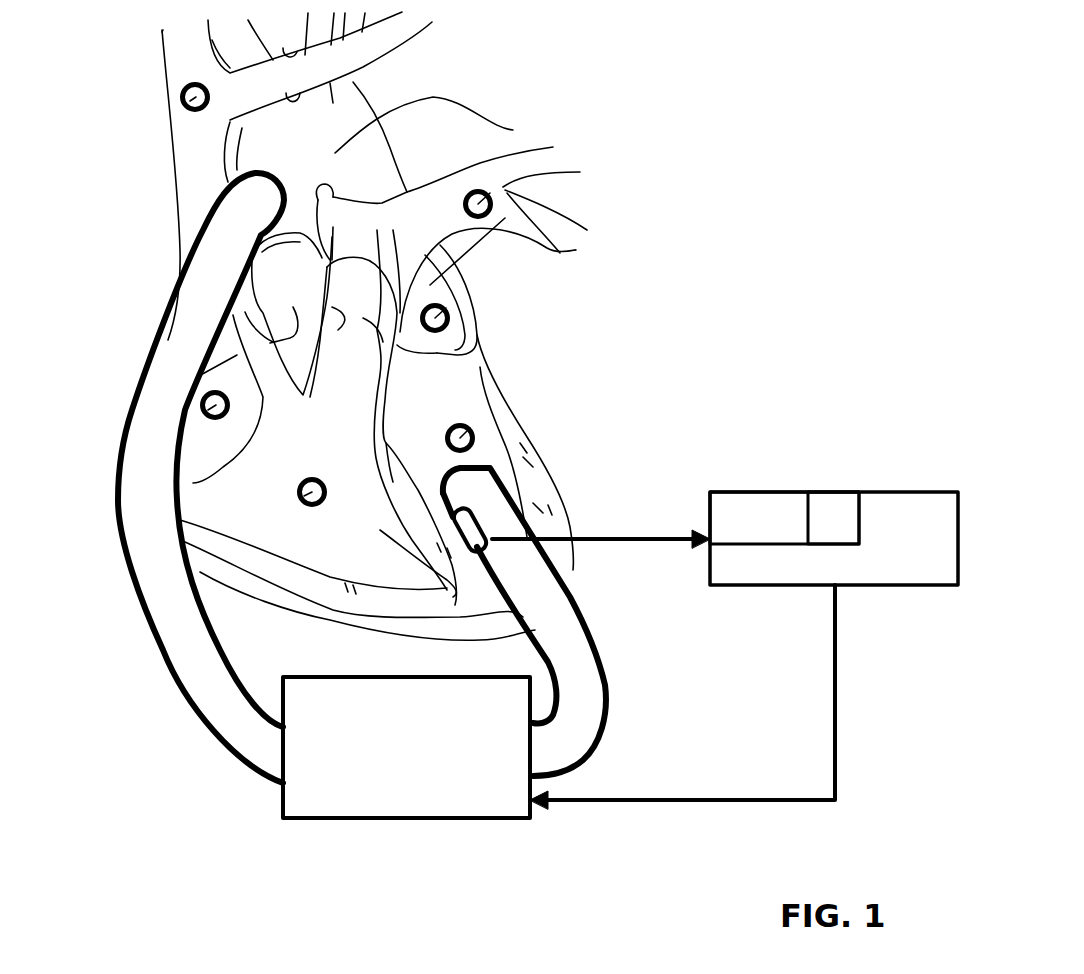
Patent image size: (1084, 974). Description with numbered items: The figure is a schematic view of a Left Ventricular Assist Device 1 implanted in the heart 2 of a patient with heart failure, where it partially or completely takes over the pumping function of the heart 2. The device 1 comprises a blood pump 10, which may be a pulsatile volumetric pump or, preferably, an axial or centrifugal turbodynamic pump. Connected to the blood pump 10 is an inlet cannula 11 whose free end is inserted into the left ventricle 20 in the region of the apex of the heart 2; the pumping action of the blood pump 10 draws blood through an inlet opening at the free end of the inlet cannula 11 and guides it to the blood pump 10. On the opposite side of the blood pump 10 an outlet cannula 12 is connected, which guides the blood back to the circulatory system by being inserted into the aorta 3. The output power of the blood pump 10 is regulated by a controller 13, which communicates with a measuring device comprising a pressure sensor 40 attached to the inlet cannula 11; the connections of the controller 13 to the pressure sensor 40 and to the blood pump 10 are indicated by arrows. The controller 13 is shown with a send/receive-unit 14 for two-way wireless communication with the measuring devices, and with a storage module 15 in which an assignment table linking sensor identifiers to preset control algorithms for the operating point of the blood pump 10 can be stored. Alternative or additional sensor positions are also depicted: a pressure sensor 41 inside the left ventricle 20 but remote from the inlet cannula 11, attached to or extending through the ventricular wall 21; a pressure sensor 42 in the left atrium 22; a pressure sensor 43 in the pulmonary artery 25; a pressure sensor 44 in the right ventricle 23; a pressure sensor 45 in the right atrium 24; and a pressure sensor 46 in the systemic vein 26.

The Left Ventricular Assist Device 1 is at (340, 842).
The heart 2 is at (517, 364).
The aorta 3 is at (513, 130).
The blood pump 10 is at (470, 783).
The inlet cannula 11 is at (513, 573).
The outlet cannula 12 is at (175, 363).
The controller 13 is at (912, 525).
The send/receive-unit 14 is at (790, 525).
The storage module 15 is at (843, 525).
The left ventricle 20 is at (417, 413).
The ventricular wall 21 is at (433, 540).
The left atrium 22 is at (575, 250).
The right ventricle 23 is at (347, 543).
The right atrium 24 is at (190, 383).
The pulmonary artery 25 is at (440, 207).
The systemic vein 26 is at (193, 163).
The pressure sensor 40 is at (470, 520).
The pressure sensor 41 is at (475, 425).
The pressure sensor 42 is at (452, 308).
The pressure sensor 43 is at (500, 188).
The pressure sensor 44 is at (305, 493).
The pressure sensor 45 is at (210, 408).
The pressure sensor 46 is at (183, 103).